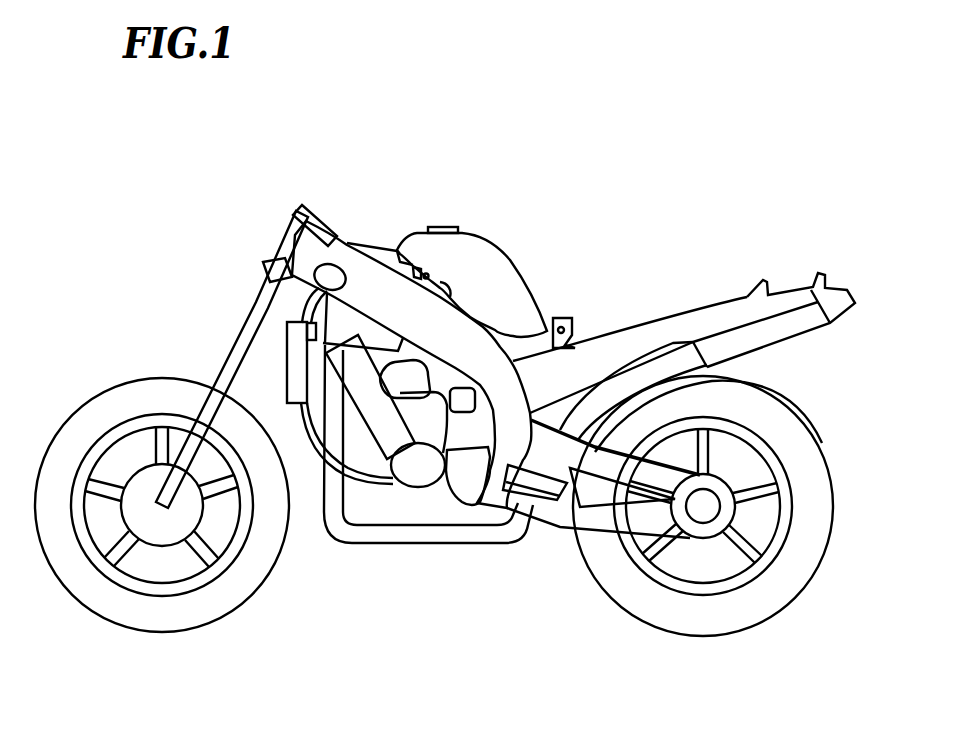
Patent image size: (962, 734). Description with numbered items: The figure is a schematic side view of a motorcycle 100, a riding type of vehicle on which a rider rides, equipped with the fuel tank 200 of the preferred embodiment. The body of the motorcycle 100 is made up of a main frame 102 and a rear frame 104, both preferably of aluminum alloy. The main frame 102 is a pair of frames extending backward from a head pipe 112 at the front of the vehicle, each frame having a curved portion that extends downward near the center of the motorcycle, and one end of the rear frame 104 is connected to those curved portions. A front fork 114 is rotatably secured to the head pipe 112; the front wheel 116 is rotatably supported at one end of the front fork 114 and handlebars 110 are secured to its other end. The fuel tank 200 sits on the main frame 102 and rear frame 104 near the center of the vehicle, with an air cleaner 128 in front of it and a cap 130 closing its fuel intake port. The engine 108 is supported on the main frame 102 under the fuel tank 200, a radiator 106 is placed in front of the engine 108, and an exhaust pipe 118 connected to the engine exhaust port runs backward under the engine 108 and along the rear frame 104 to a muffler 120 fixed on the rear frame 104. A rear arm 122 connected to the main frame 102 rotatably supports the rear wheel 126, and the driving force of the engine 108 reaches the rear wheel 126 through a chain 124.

The motorcycle 100 is at (756, 166).
The main frame 102 is at (353, 245).
The rear frame 104 is at (697, 310).
The radiator 106 is at (287, 330).
The engine 108 is at (415, 475).
The handlebars 110 is at (310, 205).
The head pipe 112 is at (290, 238).
The front fork 114 is at (227, 377).
The front wheel 116 is at (142, 612).
The exhaust pipe 118 is at (447, 535).
The muffler 120 is at (800, 327).
The rear arm 122 is at (563, 527).
The chain 124 is at (667, 460).
The rear wheel 126 is at (660, 605).
The air cleaner 128 is at (385, 232).
The cap 130 is at (447, 225).
The fuel tank 200 is at (490, 270).